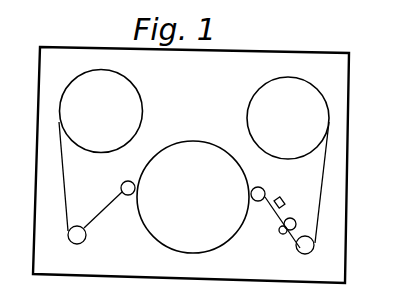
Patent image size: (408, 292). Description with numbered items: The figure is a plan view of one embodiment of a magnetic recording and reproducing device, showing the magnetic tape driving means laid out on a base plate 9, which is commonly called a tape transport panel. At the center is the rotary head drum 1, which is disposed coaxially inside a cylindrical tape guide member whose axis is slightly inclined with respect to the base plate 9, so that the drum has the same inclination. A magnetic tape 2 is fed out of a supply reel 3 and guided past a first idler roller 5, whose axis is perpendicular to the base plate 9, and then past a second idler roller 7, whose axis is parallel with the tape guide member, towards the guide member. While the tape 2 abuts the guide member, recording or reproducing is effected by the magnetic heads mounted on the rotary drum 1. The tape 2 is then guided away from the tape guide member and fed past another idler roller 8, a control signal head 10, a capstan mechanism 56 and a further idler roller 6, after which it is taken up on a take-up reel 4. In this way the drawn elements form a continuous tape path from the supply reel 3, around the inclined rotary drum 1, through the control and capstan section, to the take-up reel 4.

The rotary head drum 1 is at (198, 200).
The magnetic tape 2 is at (105, 212).
The supply reel 3 is at (106, 119).
The take-up reel 4 is at (293, 123).
The first idler roller 5 is at (80, 226).
The idler roller 6 is at (299, 252).
The second idler roller 7 is at (123, 185).
The idler roller 8 is at (257, 187).
The base plate 9 is at (335, 180).
The control signal head 10 is at (285, 197).
The capstan mechanism 56 is at (277, 228).